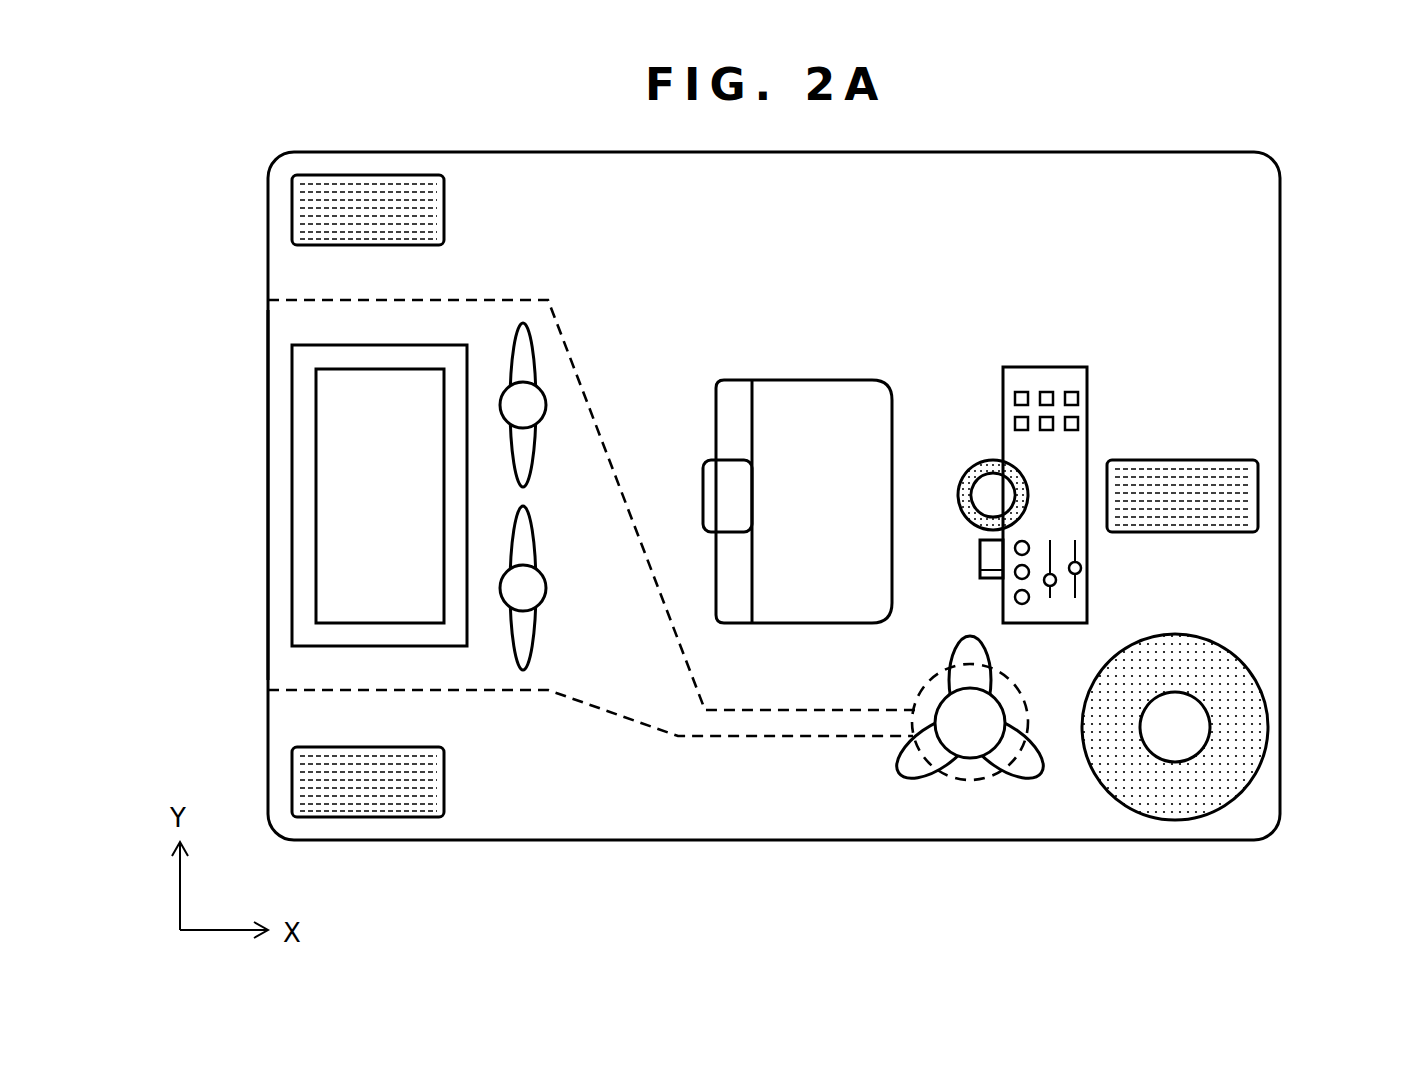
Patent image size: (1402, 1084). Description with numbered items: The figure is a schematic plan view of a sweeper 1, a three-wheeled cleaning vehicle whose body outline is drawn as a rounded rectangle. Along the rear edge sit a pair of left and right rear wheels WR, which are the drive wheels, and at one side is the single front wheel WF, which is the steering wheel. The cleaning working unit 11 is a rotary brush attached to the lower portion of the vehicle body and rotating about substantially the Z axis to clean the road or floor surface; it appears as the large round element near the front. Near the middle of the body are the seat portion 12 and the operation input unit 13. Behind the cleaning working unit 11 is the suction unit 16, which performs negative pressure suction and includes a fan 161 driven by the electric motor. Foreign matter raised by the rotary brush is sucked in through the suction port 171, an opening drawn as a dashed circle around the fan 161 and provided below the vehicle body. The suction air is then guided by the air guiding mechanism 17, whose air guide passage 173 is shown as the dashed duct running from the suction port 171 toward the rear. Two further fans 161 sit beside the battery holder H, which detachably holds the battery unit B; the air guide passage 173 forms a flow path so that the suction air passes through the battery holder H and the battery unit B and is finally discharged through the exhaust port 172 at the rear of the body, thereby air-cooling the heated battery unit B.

The sweeper 1 is at (1062, 150).
The cleaning working unit 11 is at (1268, 730).
The seat portion 12 is at (822, 380).
The operation input unit 13 is at (1039, 346).
The suction unit 16 is at (1076, 788).
The fan 161 is at (527, 325).
The air guiding mechanism 17 is at (591, 604).
The suction port 171 is at (962, 785).
The exhaust port 172 is at (254, 610).
The air guide passage 173 is at (655, 733).
The rear wheels WR is at (378, 174).
The front wheel WF is at (1259, 500).
The battery holder H is at (292, 402).
The battery unit B is at (316, 484).